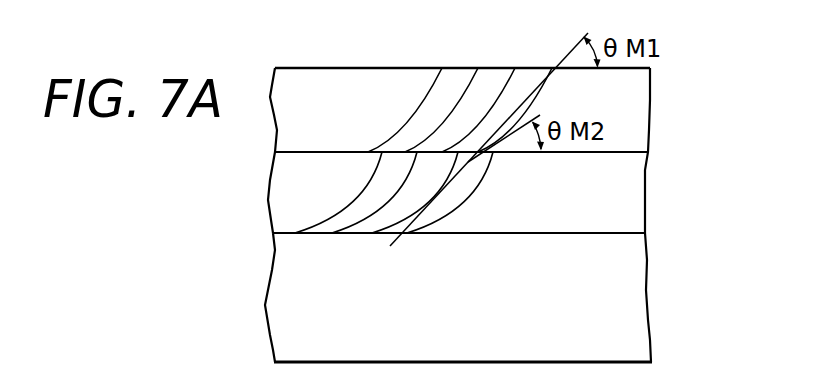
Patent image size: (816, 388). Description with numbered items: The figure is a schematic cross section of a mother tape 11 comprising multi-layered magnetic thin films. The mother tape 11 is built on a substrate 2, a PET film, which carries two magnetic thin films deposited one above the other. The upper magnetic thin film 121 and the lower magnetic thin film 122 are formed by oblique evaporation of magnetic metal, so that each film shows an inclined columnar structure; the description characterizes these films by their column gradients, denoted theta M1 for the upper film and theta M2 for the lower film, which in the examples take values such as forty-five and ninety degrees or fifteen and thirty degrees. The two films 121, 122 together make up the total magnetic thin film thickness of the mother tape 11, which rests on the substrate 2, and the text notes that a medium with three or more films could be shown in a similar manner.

The first magnetic layer (upper layer 12_1) 121 is at (648, 97).
The second magnetic layer (lower layer 12_2) 122 is at (645, 202).
The mother tape 11 is at (736, 169).
The substrate 2 is at (645, 290).